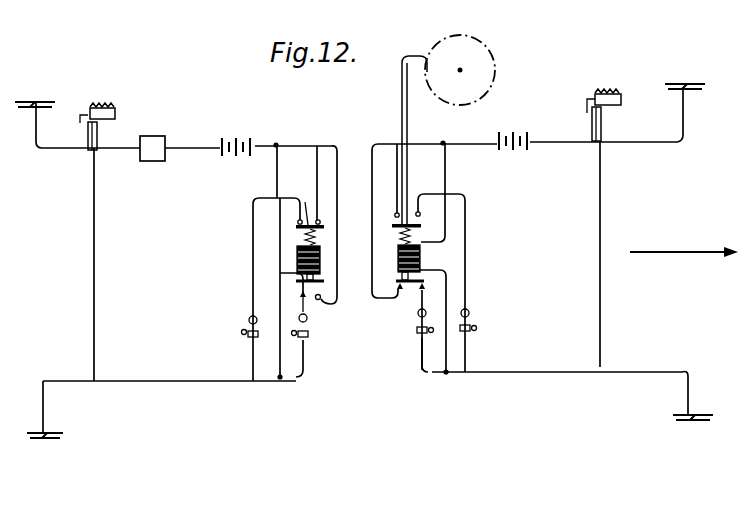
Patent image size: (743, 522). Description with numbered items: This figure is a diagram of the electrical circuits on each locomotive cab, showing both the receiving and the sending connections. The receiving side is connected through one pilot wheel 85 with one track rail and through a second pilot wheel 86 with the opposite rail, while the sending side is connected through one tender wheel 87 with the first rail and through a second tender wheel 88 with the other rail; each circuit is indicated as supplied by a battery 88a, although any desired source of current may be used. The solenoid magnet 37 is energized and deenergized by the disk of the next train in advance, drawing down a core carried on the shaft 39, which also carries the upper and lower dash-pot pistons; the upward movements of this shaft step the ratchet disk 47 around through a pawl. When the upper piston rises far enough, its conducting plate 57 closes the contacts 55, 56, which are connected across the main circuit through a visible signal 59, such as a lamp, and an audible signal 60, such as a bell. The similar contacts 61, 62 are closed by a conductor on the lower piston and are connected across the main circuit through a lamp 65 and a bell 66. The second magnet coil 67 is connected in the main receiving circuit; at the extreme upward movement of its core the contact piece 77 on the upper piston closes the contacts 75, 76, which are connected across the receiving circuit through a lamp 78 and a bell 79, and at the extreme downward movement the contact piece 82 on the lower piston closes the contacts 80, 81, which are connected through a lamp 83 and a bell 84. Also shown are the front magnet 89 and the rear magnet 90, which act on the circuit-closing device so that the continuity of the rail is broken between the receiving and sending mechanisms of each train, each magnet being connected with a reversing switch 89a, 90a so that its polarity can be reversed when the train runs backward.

The solenoid magnet 37 is at (421, 258).
The shaft 39 is at (402, 112).
The ratchet disk 47 is at (494, 66).
The electrical contact 55 is at (388, 215).
The electrical contact 56 is at (429, 215).
The conducting plate 57 is at (413, 236).
The visible signal 59 is at (470, 313).
The audible signal 60 is at (472, 333).
The contact 61 is at (424, 288).
The contact 62 is at (399, 288).
The lamp 65 is at (418, 313).
The bell 66 is at (416, 334).
The second magnet coil 67 is at (297, 262).
The contact 75 is at (291, 221).
The contact 76 is at (320, 222).
The contact piece 77 is at (308, 204).
The lamp 78 is at (250, 318).
The bell 79 is at (255, 338).
The contact 80 is at (322, 297).
The contact 81 is at (294, 300).
The contact piece 82 is at (325, 282).
The lamp 83 is at (307, 318).
The bell 84 is at (310, 337).
The pilot wheel 85 is at (686, 83).
The pilot wheel 86 is at (695, 421).
The tender wheel 87 is at (36, 101).
The tender wheel 88 is at (47, 440).
The battery 88a is at (377, 135).
The front magnet 89 is at (605, 89).
The reversing switch 89a is at (601, 120).
The rear magnet 90 is at (98, 102).
The reversing switch 90a is at (97, 132).